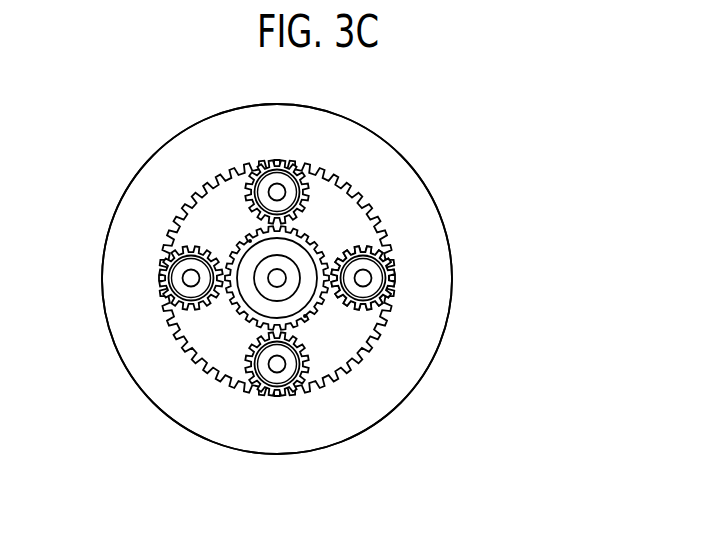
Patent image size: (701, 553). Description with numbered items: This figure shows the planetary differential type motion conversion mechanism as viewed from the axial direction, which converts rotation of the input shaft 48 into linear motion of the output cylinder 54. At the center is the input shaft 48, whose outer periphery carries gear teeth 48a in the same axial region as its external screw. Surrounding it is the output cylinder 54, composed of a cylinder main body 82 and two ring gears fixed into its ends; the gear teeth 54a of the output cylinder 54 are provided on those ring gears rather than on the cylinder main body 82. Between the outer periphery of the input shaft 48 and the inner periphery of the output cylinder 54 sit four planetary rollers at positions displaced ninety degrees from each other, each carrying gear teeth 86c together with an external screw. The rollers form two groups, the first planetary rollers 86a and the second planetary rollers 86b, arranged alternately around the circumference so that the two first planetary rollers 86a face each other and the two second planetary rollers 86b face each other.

The output cylinder 54 is at (417, 149).
The gear teeth 54a is at (348, 368).
The cylinder main body 82 is at (356, 130).
The input shaft 48 is at (305, 302).
The gear teeth 48a is at (313, 240).
The first planetary rollers 86a is at (253, 172).
The second planetary rollers 86b is at (165, 293).
The gear teeth 86c is at (373, 309).